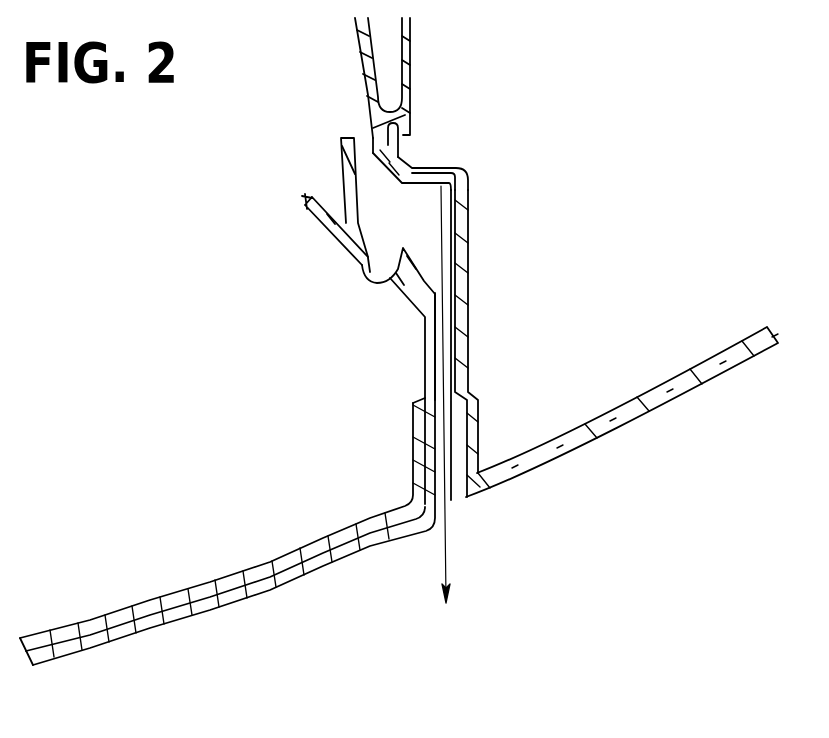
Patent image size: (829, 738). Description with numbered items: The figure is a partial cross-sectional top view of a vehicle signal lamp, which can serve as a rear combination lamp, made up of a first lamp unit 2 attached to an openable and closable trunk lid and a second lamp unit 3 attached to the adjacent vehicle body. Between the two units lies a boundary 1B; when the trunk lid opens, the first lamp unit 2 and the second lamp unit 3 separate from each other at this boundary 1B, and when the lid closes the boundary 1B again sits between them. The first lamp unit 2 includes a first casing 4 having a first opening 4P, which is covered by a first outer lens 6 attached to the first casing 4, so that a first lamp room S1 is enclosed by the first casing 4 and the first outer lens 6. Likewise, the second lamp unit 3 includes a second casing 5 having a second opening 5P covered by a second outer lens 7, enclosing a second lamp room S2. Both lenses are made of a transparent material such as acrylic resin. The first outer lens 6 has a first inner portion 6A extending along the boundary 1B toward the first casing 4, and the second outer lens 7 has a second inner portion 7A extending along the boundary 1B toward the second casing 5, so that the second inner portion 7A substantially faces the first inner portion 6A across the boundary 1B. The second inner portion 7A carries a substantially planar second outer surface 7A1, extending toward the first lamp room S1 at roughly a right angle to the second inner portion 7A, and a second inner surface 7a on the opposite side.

The boundary 1B is at (472, 394).
The first lamp unit 2 is at (227, 501).
The second lamp unit 3 is at (575, 367).
The first casing 4 is at (327, 217).
The first opening 4P is at (353, 552).
The second casing 5 is at (411, 62).
The second opening 5P is at (529, 445).
The first outer lens 6 is at (227, 479).
The first inner portion 6A is at (430, 447).
The second outer lens 7 is at (575, 304).
The second inner portion 7A is at (469, 332).
The second inner surface 7a is at (451, 162).
The second outer surface 7A1 is at (410, 184).
The first lamp room S1 is at (214, 446).
The second lamp room S2 is at (654, 311).